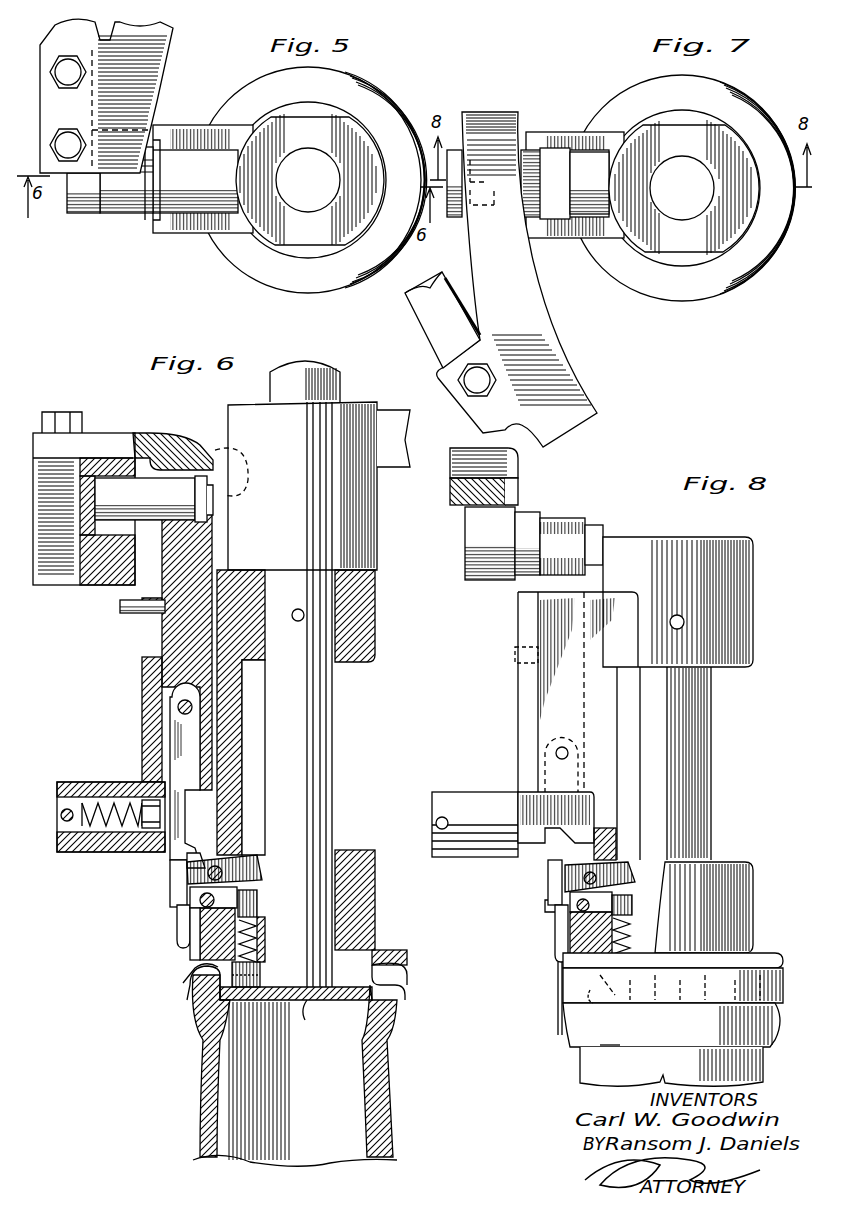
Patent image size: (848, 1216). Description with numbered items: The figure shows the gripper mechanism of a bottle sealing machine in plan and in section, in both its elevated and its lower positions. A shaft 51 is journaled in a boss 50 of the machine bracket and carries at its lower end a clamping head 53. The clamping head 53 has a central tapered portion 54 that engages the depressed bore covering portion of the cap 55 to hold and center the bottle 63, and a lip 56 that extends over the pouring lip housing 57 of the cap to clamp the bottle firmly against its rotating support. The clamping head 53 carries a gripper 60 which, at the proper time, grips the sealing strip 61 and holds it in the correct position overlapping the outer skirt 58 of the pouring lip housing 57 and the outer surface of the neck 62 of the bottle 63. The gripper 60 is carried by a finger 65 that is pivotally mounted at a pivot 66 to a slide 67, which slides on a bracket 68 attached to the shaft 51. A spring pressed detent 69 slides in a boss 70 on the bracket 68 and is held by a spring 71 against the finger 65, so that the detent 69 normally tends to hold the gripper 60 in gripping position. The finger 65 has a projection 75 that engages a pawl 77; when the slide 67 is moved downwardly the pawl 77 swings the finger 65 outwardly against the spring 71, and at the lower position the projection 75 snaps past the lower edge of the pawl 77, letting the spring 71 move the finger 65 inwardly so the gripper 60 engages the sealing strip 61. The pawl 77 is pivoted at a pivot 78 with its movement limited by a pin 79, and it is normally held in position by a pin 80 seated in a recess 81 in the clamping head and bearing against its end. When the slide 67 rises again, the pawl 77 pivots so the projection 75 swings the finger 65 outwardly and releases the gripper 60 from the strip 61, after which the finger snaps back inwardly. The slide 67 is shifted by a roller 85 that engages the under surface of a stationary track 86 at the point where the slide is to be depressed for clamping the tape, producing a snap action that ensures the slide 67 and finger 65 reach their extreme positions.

In FIG. 6, the boss 50 is at (360, 503).
In FIG. 6, the shaft 51 is at (312, 718).
In FIG. 5, the clamping head 53 is at (295, 252).
In FIG. 7, the clamping head 53 is at (700, 258).
In FIG. 6, the clamping head 53 is at (358, 900).
In FIG. 8, the clamping head 53 is at (750, 905).
In FIG. 6, the central tapered portion 54 is at (385, 962).
In FIG. 8, the central tapered portion 54 is at (783, 985).
In FIG. 6, the cap 55 is at (305, 1020).
In FIG. 8, the cap 55 is at (593, 1000).
In FIG. 5, the lip 56 is at (332, 282).
In FIG. 7, the lip 56 is at (652, 283).
In FIG. 6, the lip 56 is at (405, 970).
In FIG. 8, the lip 56 is at (770, 955).
In FIG. 6, the pouring lip housing 57 is at (407, 978).
In FIG. 6, the outer skirt 58 is at (380, 1000).
In FIG. 8, the outer skirt 58 is at (604, 1005).
In FIG. 6, the gripper 60 is at (178, 935).
In FIG. 8, the gripper 60 is at (558, 983).
In FIG. 8, the sealing strip 61 is at (557, 1020).
In FIG. 6, the neck 62 is at (395, 1030).
In FIG. 8, the neck 62 is at (615, 1045).
In FIG. 6, the bottle 63 is at (395, 1140).
In FIG. 8, the bottle 63 is at (671, 1066).
In FIG. 6, the finger 65 is at (172, 893).
In FIG. 8, the finger 65 is at (555, 935).
In FIG. 6, the pivot 66 is at (180, 707).
In FIG. 6, the slide 67 is at (175, 640).
In FIG. 6, the bracket 68 is at (360, 632).
In FIG. 8, the bracket 68 is at (730, 640).
In FIG. 6, the spring pressed detent 69 is at (150, 838).
In FIG. 8, the spring pressed detent 69 is at (540, 855).
In FIG. 6, the boss 70 is at (108, 782).
In FIG. 8, the boss 70 is at (478, 800).
In FIG. 6, the spring 71 is at (100, 805).
In FIG. 6, the projection 75 is at (195, 860).
In FIG. 8, the projection 75 is at (545, 905).
In FIG. 6, the pawl 77 is at (225, 873).
In FIG. 8, the pawl 77 is at (597, 878).
In FIG. 6, the pivot 78 is at (225, 868).
In FIG. 8, the pivot 78 is at (600, 870).
In FIG. 6, the pin 79 is at (200, 900).
In FIG. 8, the pin 79 is at (575, 905).
In FIG. 6, the pin 80 is at (260, 900).
In FIG. 8, the pin 80 is at (575, 950).
In FIG. 6, the recess 81 is at (258, 938).
In FIG. 5, the roller 85 is at (150, 130).
In FIG. 7, the roller 85 is at (518, 135).
In FIG. 6, the roller 85 is at (95, 458).
In FIG. 8, the roller 85 is at (470, 583).
In FIG. 5, the stationary track 86 is at (120, 38).
In FIG. 7, the stationary track 86 is at (496, 247).
In FIG. 6, the stationary track 86 is at (165, 445).
In FIG. 8, the stationary track 86 is at (520, 482).